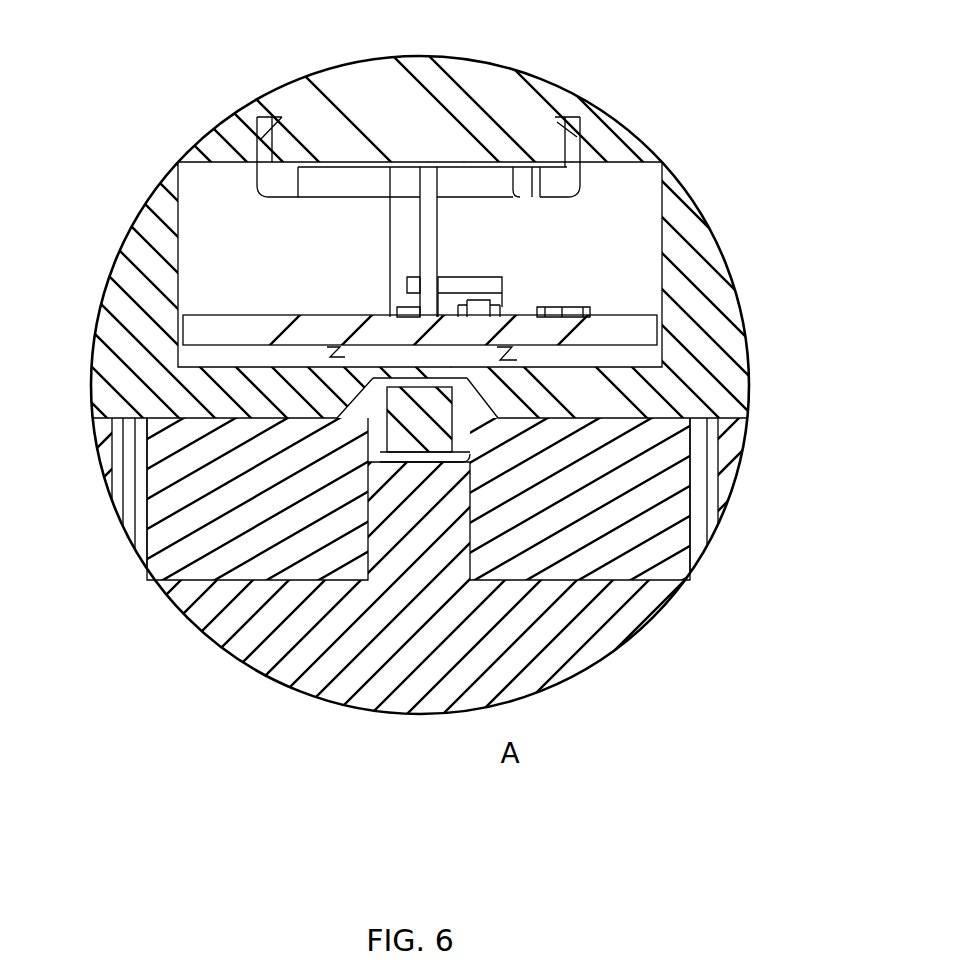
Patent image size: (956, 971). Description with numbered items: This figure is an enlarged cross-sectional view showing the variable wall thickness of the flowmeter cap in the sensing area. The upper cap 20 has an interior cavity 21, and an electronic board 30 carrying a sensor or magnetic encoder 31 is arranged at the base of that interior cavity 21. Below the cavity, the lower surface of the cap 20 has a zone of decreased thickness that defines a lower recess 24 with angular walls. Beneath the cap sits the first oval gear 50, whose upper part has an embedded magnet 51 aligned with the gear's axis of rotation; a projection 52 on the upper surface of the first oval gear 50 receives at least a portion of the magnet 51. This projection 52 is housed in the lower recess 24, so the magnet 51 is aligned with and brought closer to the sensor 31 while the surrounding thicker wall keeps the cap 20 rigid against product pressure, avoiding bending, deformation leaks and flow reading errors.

The upper cap 20 is at (126, 357).
The interior cavity 21 is at (598, 228).
The lower recess 24 is at (492, 397).
The electronic board 30 is at (224, 332).
The sensor or magnetic encoder 31 is at (423, 356).
The first oval gear 50 is at (254, 507).
The magnet 51 is at (420, 422).
The projection 52 is at (351, 404).